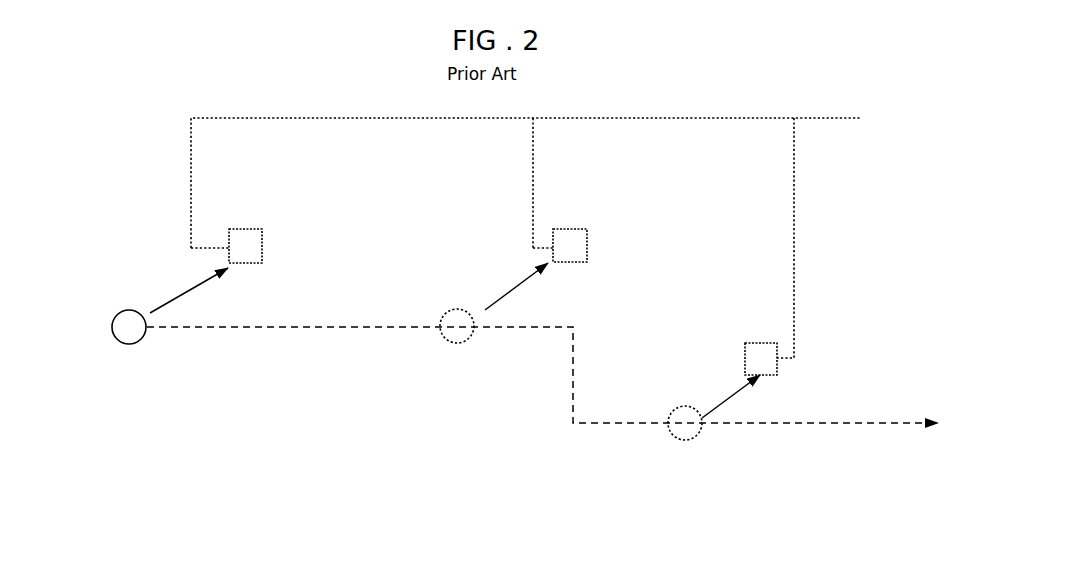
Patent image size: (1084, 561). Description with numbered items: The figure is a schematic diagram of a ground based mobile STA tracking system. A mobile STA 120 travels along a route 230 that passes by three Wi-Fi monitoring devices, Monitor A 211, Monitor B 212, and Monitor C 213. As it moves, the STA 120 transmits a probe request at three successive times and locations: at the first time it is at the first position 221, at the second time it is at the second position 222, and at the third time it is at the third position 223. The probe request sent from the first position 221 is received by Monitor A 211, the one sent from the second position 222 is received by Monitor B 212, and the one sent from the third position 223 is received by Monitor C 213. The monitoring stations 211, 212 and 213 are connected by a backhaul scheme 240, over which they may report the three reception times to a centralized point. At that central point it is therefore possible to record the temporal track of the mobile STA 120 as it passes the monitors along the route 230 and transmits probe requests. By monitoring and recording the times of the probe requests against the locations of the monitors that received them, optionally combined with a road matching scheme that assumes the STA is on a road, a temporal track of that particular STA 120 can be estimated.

The mobile STA 120 is at (129, 327).
The Monitor A 211 is at (243, 229).
The Monitor B 212 is at (577, 229).
The Monitor C 213 is at (763, 343).
The position 1 221 is at (127, 344).
The position 2 222 is at (450, 345).
The position 3 223 is at (660, 437).
The route 230 is at (858, 423).
The backhaul scheme 240 is at (818, 118).